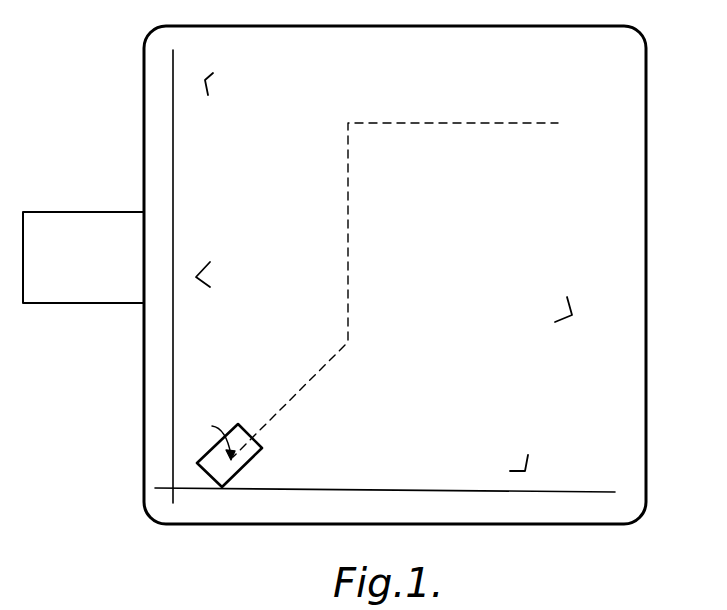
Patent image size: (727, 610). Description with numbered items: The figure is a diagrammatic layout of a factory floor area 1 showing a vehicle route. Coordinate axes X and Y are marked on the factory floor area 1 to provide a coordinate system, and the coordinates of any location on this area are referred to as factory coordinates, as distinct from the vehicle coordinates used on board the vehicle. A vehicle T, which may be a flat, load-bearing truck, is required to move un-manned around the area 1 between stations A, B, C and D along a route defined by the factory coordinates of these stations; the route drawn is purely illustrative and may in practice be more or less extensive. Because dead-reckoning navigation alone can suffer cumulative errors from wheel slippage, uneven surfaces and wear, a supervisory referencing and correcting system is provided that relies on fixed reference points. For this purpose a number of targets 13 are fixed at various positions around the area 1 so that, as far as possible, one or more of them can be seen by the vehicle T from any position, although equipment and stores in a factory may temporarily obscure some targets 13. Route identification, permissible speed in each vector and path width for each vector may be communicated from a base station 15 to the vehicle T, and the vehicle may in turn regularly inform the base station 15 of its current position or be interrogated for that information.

The factory floor area 1 is at (647, 234).
The targets 13 is at (207, 79).
The base station 15 is at (72, 304).
The vehicle T is at (253, 462).
The station A is at (216, 437).
The coordinate axis X is at (560, 493).
The coordinate axis Y is at (173, 100).
The station B is at (298, 391).
The station C is at (430, 227).
The station D is at (555, 138).